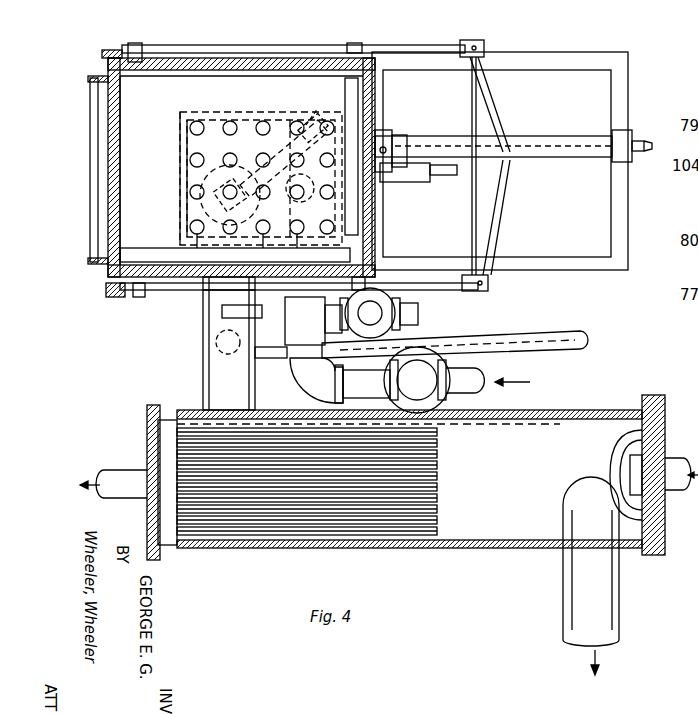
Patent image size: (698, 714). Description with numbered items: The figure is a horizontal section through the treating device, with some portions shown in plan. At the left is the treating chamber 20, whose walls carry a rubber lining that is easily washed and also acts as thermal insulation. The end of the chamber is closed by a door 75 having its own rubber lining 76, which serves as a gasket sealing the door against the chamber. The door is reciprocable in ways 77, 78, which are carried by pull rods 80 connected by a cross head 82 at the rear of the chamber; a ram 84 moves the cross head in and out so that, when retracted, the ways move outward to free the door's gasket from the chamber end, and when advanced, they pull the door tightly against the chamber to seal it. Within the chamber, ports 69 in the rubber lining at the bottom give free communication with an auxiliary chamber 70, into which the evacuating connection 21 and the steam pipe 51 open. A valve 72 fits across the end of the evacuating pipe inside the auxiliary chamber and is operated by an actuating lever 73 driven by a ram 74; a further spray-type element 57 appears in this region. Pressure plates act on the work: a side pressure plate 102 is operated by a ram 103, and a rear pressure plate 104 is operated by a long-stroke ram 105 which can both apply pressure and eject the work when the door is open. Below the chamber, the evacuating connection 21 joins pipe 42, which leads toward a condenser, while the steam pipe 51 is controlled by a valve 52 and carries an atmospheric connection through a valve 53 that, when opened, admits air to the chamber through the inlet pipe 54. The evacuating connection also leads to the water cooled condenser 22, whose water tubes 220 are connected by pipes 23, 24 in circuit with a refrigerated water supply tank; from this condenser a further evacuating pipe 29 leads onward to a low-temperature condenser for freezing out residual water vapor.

The treating chamber 20 is at (178, 90).
The evacuating connection 21 is at (205, 370).
The water cooled condenser 22 is at (503, 505).
The pipe 23 is at (676, 468).
The pipe 24 is at (118, 483).
The pipe 29 is at (602, 607).
The pipe 42 is at (280, 345).
The steam pipe 51 is at (472, 380).
The valve 52 is at (420, 372).
The valve 53 is at (388, 302).
The inlet pipe 54 is at (410, 320).
The nozzle 57 is at (302, 188).
The ports 69 is at (191, 130).
The auxiliary chamber 70 is at (180, 176).
The valve 72 is at (187, 210).
The actuating lever 73 is at (292, 152).
The ram 74 is at (308, 124).
The door 75 is at (107, 102).
The rubber lining 76 is at (110, 120).
The way 77 is at (114, 54).
The way 78 is at (110, 296).
The pull rods 80 is at (412, 50).
The cross head 82 is at (495, 116).
The ram 84 is at (432, 180).
The pressure plate 102 is at (160, 245).
The ram 103 is at (222, 298).
The pressure plate 104 is at (352, 112).
The ram 105 is at (450, 150).
The water tubes 220 is at (285, 527).